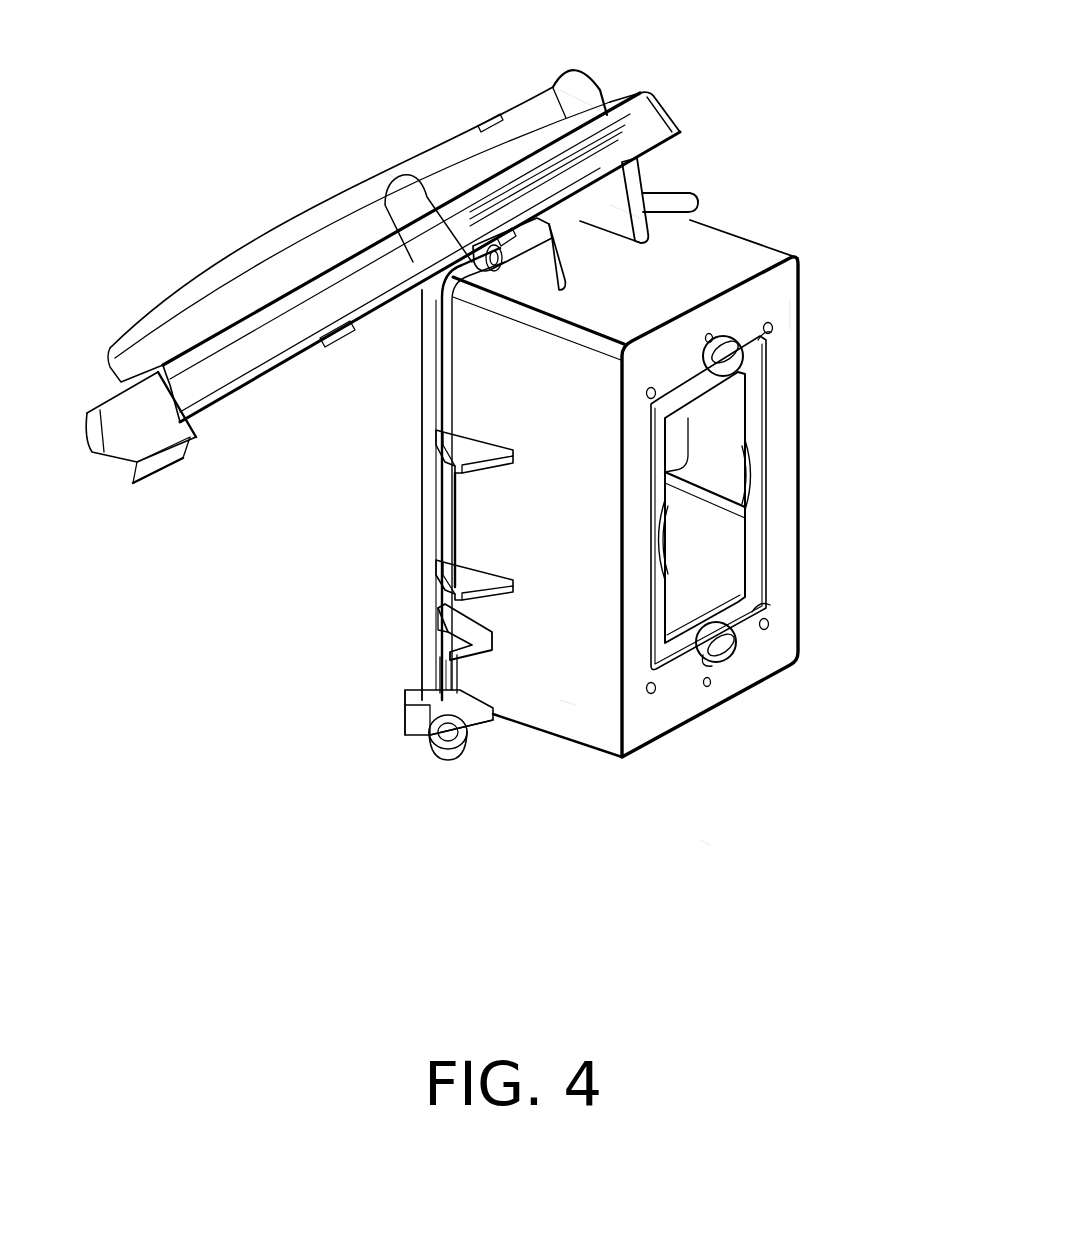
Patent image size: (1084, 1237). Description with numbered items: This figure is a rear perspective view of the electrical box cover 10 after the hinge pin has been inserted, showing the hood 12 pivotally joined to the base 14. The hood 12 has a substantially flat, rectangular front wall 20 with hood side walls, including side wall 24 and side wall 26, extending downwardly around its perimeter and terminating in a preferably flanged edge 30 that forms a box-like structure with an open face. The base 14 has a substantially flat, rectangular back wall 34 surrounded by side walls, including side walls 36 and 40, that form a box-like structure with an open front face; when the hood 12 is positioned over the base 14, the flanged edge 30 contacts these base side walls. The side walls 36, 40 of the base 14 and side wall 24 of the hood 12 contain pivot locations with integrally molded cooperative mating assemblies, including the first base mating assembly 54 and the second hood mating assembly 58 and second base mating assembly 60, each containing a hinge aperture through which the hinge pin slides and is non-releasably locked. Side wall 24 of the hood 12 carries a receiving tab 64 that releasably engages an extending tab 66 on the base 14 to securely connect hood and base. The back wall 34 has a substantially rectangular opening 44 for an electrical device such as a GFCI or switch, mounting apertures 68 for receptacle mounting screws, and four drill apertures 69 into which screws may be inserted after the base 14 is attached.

The electrical box cover 10 is at (678, 815).
The hood 12 is at (599, 85).
The base 14 is at (740, 220).
The front wall 20 is at (417, 146).
The hood side wall 24 is at (247, 293).
The hood side wall 26 is at (553, 125).
The edge 30 is at (273, 340).
The back wall 34 is at (783, 290).
The base side wall 36 is at (560, 690).
The base side wall 40 is at (737, 258).
The opening 44 is at (745, 545).
The first base mating assembly 54 is at (450, 567).
The second hood mating assembly 58 is at (642, 180).
The second base mating assembly 60 is at (668, 200).
The receiving tab 64 is at (420, 705).
The extending tab 66 is at (133, 460).
The mounting aperture 68 is at (736, 352).
The drill aperture 69 is at (772, 332).